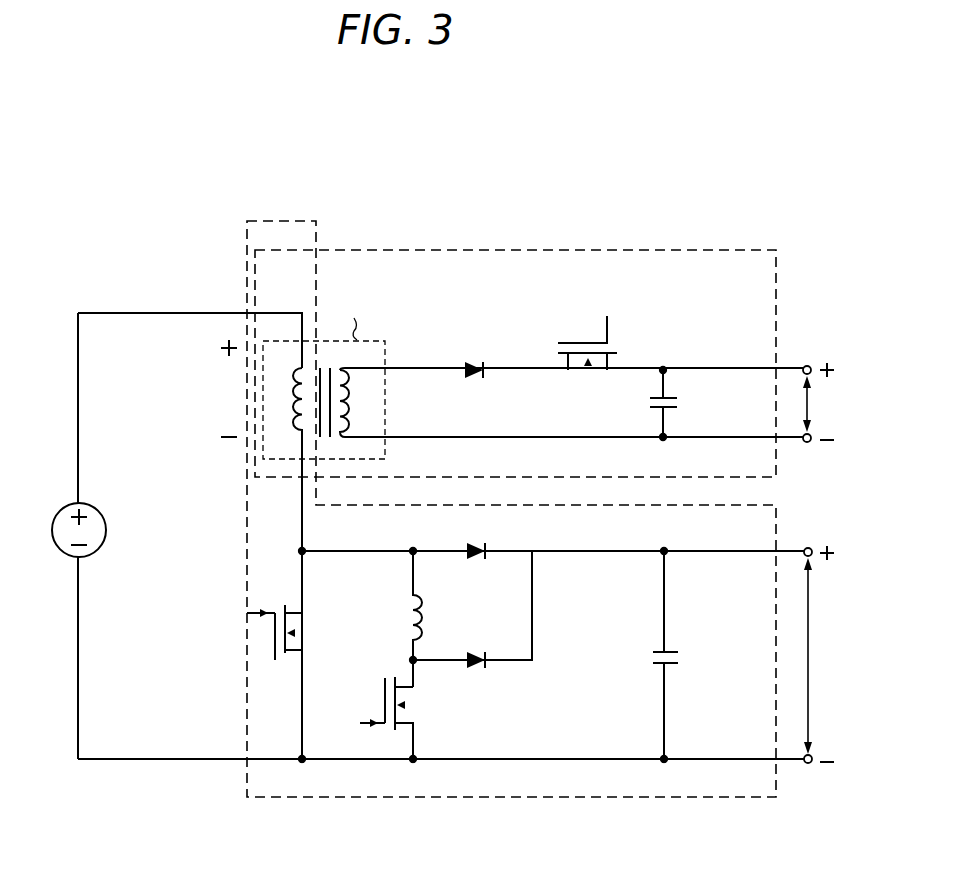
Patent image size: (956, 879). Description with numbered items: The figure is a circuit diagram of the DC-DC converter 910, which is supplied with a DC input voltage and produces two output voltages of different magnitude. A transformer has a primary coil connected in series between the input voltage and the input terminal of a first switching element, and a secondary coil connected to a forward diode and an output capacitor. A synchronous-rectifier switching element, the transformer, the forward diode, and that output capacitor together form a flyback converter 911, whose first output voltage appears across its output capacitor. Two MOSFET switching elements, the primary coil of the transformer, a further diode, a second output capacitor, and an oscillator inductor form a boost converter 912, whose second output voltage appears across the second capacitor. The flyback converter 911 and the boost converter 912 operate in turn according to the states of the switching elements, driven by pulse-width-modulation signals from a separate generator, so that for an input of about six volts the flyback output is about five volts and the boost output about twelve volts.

The DC-DC converter 910 is at (589, 187).
The flyback converter 911 is at (731, 250).
The boost converter 912 is at (674, 798).